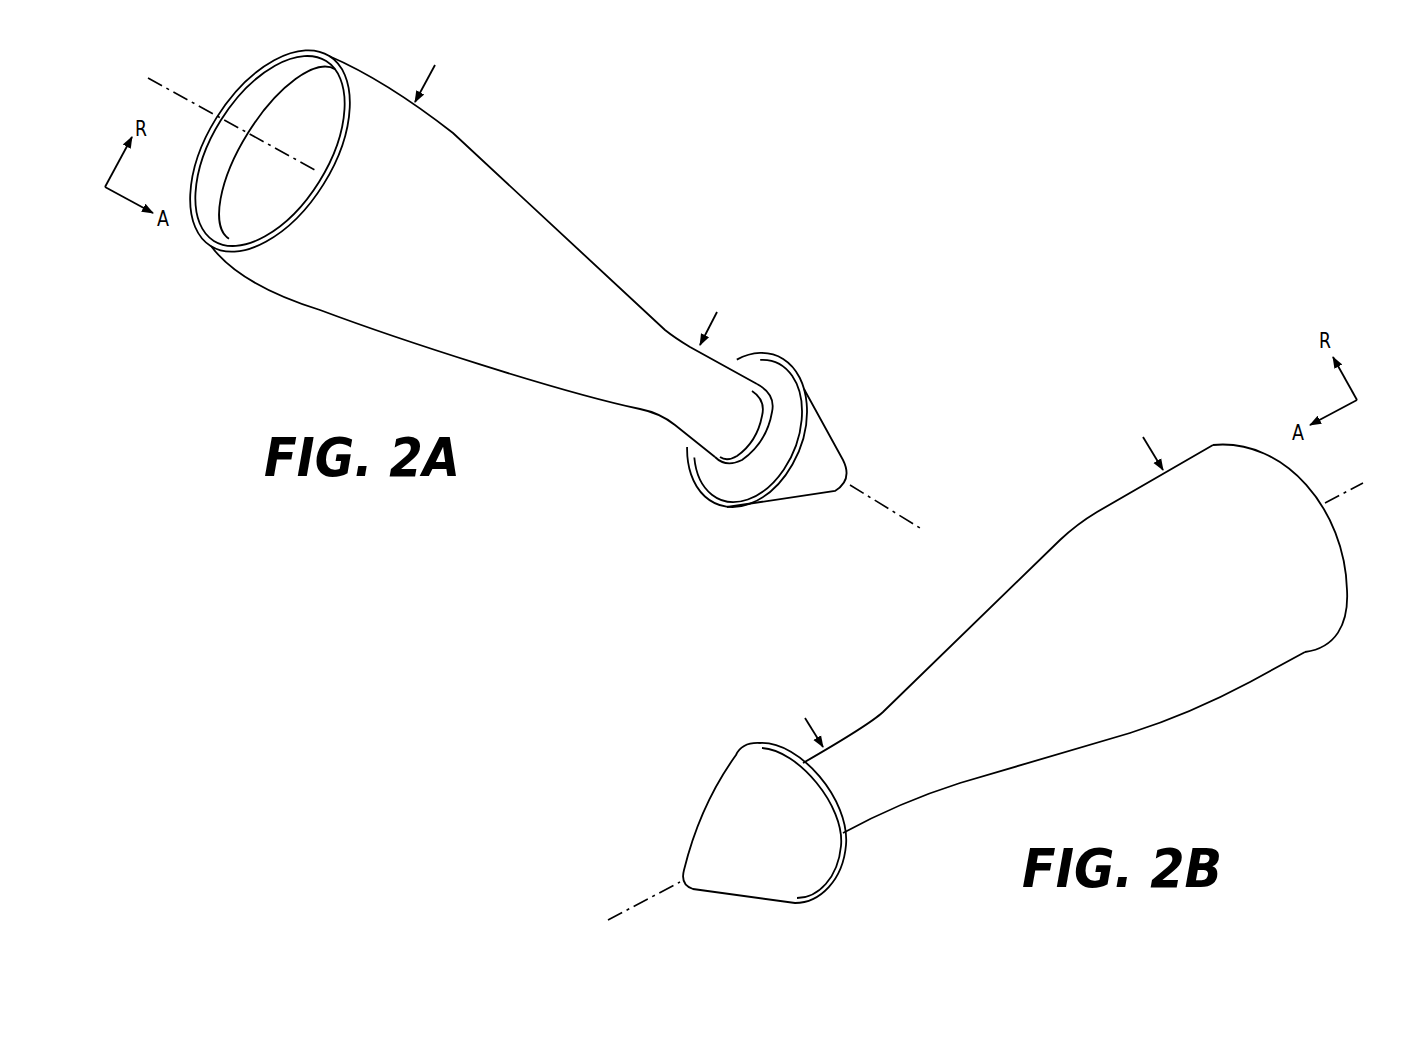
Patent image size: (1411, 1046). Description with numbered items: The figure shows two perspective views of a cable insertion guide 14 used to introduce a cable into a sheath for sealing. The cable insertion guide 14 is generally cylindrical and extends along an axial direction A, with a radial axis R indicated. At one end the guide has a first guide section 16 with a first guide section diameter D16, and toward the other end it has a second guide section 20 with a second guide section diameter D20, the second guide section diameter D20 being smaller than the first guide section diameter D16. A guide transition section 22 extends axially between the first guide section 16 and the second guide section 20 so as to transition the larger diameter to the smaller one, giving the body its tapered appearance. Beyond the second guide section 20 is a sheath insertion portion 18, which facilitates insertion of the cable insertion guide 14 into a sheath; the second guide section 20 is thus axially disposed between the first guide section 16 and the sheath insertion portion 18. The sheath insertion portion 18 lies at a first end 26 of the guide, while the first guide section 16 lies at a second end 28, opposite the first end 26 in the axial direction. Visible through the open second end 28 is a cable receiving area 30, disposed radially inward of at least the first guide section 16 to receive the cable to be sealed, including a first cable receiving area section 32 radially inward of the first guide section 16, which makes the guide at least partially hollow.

In FIG. 2A, the cable insertion guide 14 is at (513, 100).
In FIG. 2B, the cable insertion guide 14 is at (1025, 505).
In FIG. 2A, the first guide section 16 is at (353, 68).
In FIG. 2B, the first guide section 16 is at (1212, 442).
In FIG. 2A, the sheath insertion portion 18 is at (830, 425).
In FIG. 2B, the sheath insertion portion 18 is at (700, 815).
In FIG. 2A, the second guide section 20 is at (712, 362).
In FIG. 2B, the second guide section 20 is at (840, 740).
In FIG. 2A, the guide transition section 22 is at (538, 210).
In FIG. 2B, the guide transition section 22 is at (948, 645).
In FIG. 2A, the first end 26 is at (852, 355).
In FIG. 2B, the first end 26 is at (700, 750).
In FIG. 2A, the second end 28 is at (195, 88).
In FIG. 2B, the second end 28 is at (1353, 622).
In FIG. 2A, the cable receiving area 30 is at (295, 108).
In FIG. 2A, the first cable receiving area section 32 is at (277, 153).
In FIG. 2A, the first guide section diameter D16 is at (300, 303).
In FIG. 2B, the first guide section diameter D16 is at (1283, 668).
In FIG. 2A, the second guide section diameter D20 is at (652, 421).
In FIG. 2B, the second guide section diameter D20 is at (868, 822).